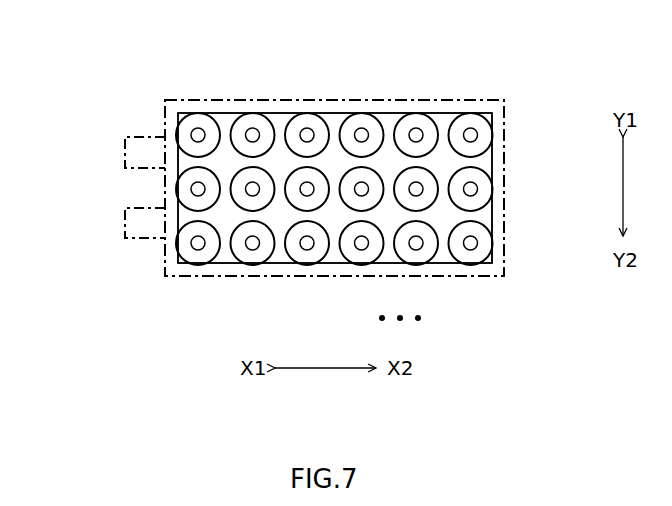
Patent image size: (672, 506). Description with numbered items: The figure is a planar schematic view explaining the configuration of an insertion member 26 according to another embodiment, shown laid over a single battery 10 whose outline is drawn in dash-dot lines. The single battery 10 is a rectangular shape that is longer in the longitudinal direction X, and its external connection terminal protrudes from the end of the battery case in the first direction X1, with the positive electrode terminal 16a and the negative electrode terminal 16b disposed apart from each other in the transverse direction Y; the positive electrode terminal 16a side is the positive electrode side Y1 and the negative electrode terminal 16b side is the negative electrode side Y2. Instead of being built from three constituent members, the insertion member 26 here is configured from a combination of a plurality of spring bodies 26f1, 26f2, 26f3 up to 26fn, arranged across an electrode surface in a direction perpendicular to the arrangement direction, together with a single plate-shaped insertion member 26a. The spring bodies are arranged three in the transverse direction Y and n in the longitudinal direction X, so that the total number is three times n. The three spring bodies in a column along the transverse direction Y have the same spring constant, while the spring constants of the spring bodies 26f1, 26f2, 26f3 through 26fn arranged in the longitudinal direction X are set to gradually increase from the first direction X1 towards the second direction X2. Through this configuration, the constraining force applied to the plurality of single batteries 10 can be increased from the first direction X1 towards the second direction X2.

The single battery 10 is at (176, 94).
The positive electrode terminal 16a is at (138, 152).
The negative electrode terminal 16b is at (138, 224).
The insertion member 26 is at (426, 103).
The plate-shaped insertion member 26a is at (335, 120).
The spring body 26f1 is at (194, 266).
The spring body 26f2 is at (249, 266).
The spring body 26f3 is at (301, 266).
The spring body 26fn is at (467, 266).